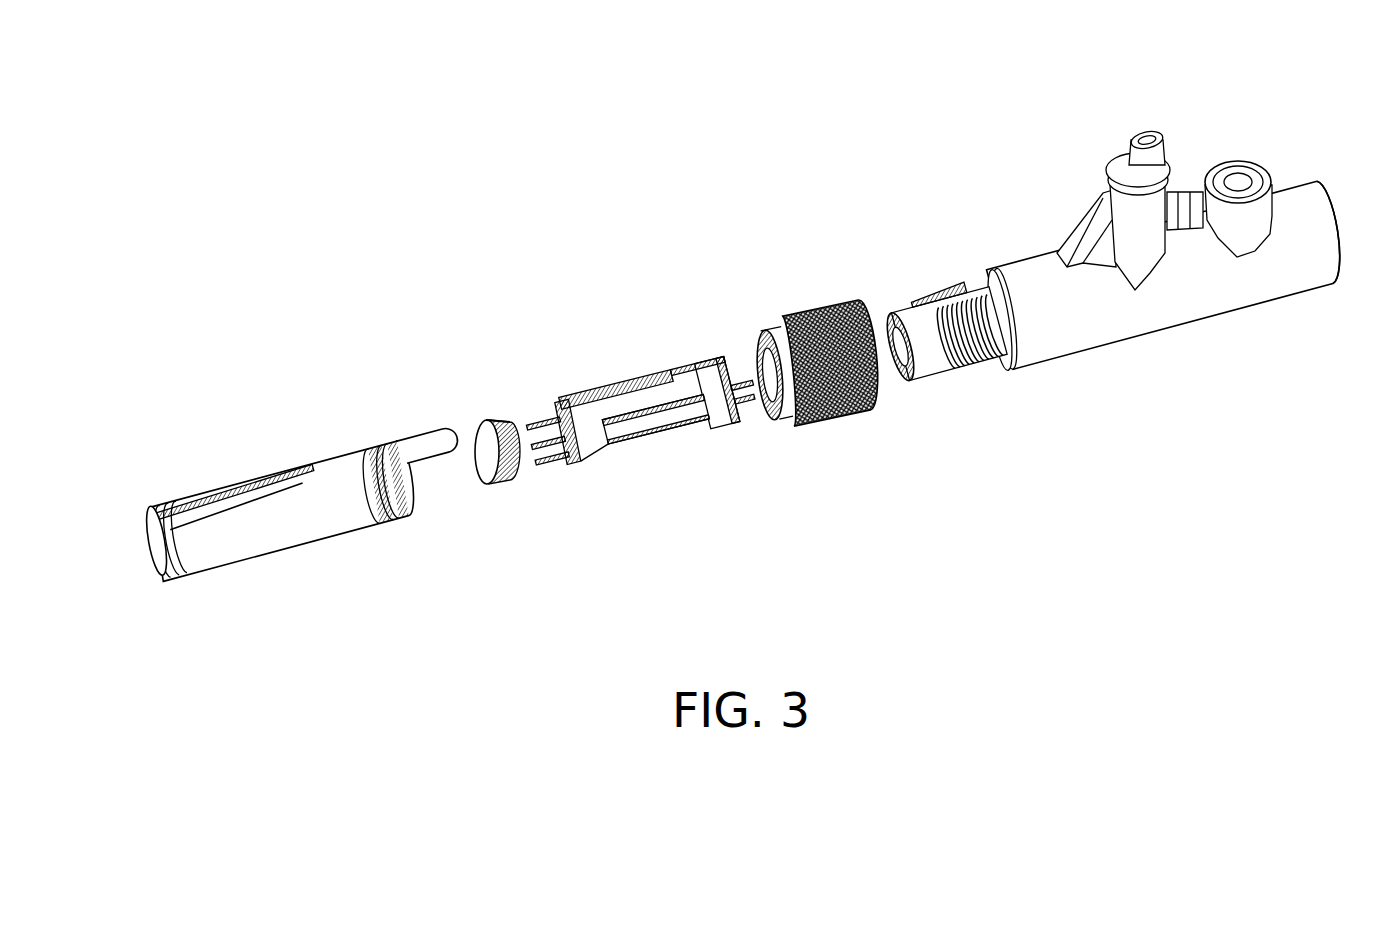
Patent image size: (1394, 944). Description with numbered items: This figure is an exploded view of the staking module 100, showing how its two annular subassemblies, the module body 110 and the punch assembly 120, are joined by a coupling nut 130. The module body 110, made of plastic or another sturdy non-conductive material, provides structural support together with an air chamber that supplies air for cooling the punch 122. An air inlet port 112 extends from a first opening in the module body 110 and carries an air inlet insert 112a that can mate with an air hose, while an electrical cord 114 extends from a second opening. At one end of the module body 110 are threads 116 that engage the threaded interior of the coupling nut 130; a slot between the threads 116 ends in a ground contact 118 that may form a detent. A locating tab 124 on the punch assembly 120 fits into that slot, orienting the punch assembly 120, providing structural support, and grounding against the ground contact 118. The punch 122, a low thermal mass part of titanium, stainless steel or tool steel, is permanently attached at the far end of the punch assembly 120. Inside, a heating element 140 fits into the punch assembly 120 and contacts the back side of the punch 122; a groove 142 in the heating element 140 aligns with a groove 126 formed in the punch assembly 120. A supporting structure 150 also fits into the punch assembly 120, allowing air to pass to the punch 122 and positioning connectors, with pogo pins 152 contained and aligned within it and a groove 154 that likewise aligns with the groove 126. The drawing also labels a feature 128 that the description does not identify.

The staking module 100 is at (420, 150).
The module body 110 is at (1128, 259).
The air inlet port 112 is at (1248, 170).
The air inlet insert 112a is at (1218, 185).
The electrical cord 114 is at (1148, 135).
The threads 116 is at (963, 353).
The ground contact 118 is at (958, 297).
The punch assembly 120 is at (277, 500).
The punch 122 is at (145, 532).
The locating tab 124 is at (425, 425).
The groove 126 is at (232, 490).
The rim 128 is at (170, 548).
The coupling nut 130 is at (820, 330).
The heating element 140 is at (513, 441).
The groove 142 is at (497, 425).
The supporting structure 150 is at (642, 423).
The pogo pins 152 is at (556, 478).
The groove 154 is at (605, 397).